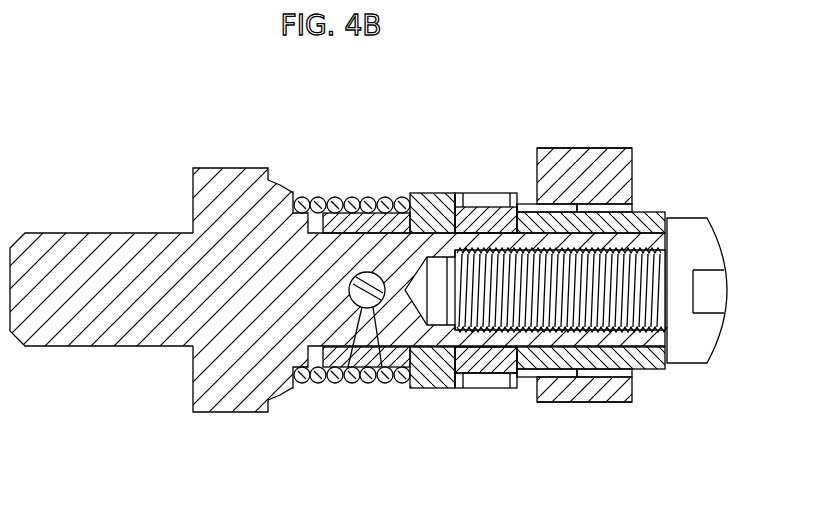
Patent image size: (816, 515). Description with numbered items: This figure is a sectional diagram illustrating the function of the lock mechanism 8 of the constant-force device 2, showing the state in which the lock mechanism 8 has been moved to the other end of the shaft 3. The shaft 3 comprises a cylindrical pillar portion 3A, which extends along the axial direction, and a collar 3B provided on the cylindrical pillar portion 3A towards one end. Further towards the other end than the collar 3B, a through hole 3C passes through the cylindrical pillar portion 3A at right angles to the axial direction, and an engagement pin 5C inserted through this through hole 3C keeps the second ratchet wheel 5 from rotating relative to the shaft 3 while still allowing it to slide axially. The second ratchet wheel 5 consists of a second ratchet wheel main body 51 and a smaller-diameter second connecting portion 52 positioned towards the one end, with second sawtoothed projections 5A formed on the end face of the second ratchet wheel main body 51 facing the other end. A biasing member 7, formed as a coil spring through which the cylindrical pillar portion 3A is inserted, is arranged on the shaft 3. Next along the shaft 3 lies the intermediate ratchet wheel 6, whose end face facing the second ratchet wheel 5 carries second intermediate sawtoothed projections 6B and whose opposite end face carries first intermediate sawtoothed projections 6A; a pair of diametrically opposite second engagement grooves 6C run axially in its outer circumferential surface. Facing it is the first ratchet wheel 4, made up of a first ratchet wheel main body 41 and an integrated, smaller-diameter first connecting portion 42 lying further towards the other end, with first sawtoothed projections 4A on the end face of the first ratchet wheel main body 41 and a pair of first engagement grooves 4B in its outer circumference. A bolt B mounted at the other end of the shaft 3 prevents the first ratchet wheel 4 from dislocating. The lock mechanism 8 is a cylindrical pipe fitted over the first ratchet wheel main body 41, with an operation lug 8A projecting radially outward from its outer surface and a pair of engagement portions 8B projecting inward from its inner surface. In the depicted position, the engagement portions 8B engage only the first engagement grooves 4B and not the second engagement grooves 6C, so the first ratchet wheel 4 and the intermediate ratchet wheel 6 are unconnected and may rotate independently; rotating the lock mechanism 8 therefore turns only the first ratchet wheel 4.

The constant-force device 2 is at (104, 156).
The shaft 3 is at (152, 406).
The cylindrical pillar portion 3A is at (78, 347).
The collar 3B is at (193, 368).
The through hole 3C is at (348, 386).
The first ratchet wheel 4 is at (552, 465).
The first sawtoothed projections 4A is at (514, 388).
The first engagement grooves 4B is at (532, 212).
The first ratchet wheel main body 41 is at (560, 402).
The first connecting portion 42 is at (604, 402).
The second ratchet wheel 5 is at (352, 143).
The second sawtoothed projections 5A is at (462, 193).
The engagement pin 5C is at (383, 386).
The second ratchet wheel main body 51 is at (434, 194).
The second connecting portion 52 is at (357, 196).
The intermediate ratchet wheel 6 is at (493, 205).
The first intermediate sawtoothed projections 6A is at (541, 416).
The second intermediate sawtoothed projections 6B is at (481, 238).
The second engagement grooves 6C is at (485, 194).
The biasing member 7 is at (318, 195).
The lock mechanism 8 is at (560, 148).
The operation lug 8A is at (607, 148).
The engagement portions 8B is at (625, 205).
The bolt B is at (703, 218).